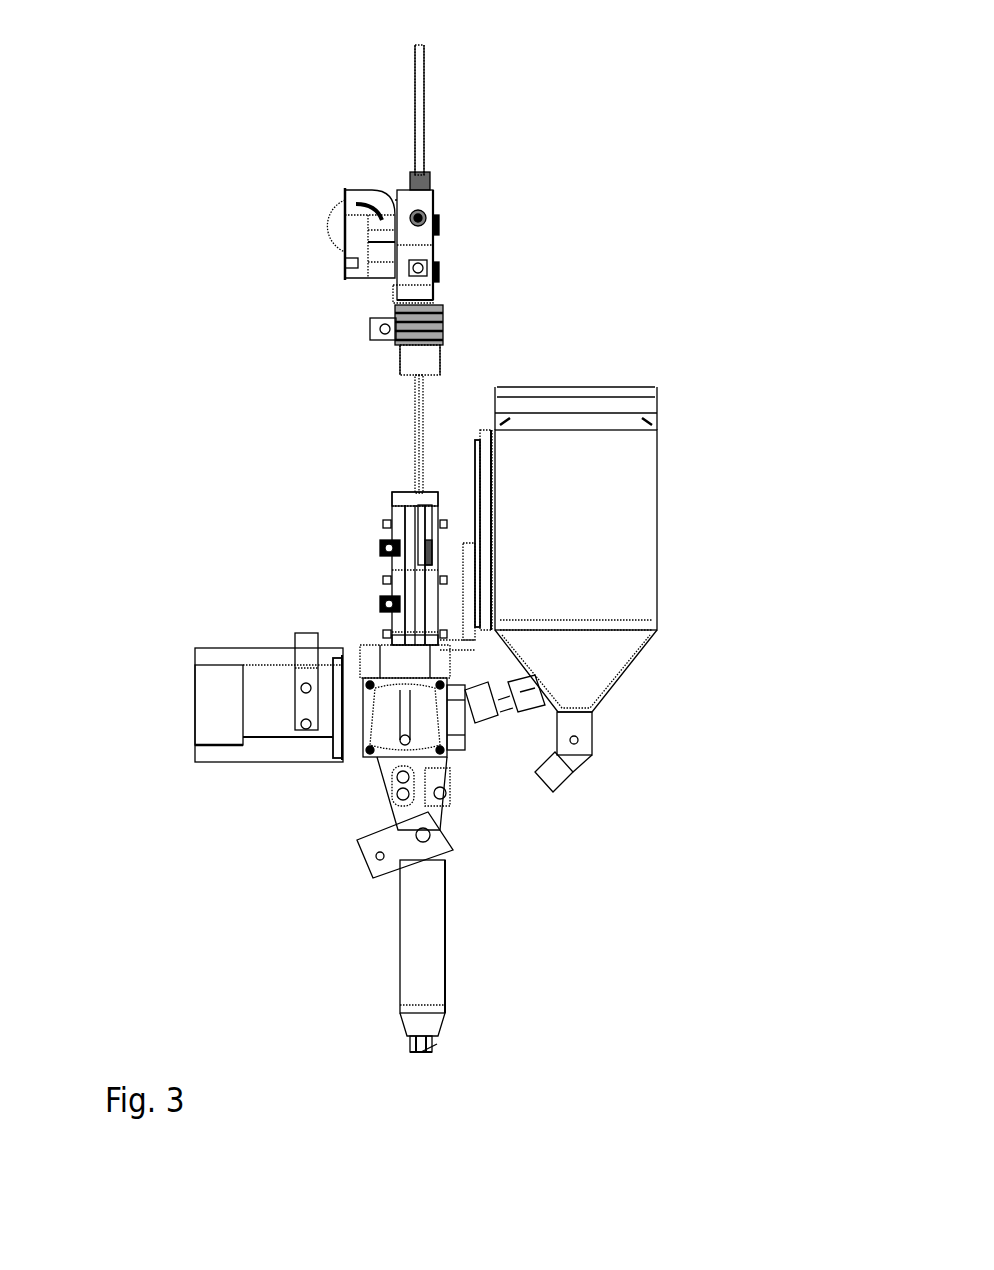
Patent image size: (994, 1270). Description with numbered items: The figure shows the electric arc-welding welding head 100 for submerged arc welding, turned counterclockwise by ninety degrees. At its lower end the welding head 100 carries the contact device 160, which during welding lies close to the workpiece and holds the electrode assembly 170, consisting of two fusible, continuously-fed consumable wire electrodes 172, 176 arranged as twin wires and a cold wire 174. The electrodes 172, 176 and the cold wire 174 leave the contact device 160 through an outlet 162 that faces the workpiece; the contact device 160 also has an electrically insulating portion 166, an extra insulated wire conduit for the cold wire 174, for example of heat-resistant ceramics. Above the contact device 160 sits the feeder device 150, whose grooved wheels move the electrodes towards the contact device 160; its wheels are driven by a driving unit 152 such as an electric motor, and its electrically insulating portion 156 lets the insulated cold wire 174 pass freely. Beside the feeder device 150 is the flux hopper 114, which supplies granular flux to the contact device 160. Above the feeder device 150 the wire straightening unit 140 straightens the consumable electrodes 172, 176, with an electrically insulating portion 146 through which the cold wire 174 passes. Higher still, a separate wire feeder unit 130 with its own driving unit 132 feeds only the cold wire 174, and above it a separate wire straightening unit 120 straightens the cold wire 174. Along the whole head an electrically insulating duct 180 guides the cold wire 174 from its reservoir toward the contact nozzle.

The electric arc-welding welding head 100 is at (184, 352).
The flux hopper 114 is at (623, 500).
The wire straightening unit 120 is at (402, 186).
The wire feeder unit 130 is at (440, 320).
The driving unit 132 is at (336, 224).
The wire straightening unit 140 is at (369, 517).
The electrically insulating portion 146 is at (415, 568).
The feeder device 150 is at (440, 567).
The driving unit 152 is at (240, 745).
The electrically insulating portion 156 is at (486, 530).
The contact device 160 is at (444, 920).
The outlet 162 is at (408, 1046).
The electrically insulating portion 166 is at (452, 925).
The electrode assembly 170 is at (441, 1049).
The consumable wire electrode 172 is at (410, 1051).
The cold wire 174 is at (421, 1056).
The consumable wire electrode 176 is at (431, 1057).
The electrically insulating duct 180 is at (421, 106).